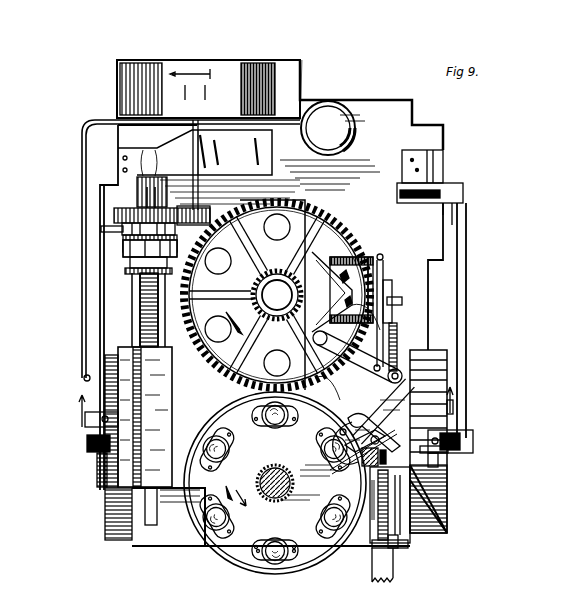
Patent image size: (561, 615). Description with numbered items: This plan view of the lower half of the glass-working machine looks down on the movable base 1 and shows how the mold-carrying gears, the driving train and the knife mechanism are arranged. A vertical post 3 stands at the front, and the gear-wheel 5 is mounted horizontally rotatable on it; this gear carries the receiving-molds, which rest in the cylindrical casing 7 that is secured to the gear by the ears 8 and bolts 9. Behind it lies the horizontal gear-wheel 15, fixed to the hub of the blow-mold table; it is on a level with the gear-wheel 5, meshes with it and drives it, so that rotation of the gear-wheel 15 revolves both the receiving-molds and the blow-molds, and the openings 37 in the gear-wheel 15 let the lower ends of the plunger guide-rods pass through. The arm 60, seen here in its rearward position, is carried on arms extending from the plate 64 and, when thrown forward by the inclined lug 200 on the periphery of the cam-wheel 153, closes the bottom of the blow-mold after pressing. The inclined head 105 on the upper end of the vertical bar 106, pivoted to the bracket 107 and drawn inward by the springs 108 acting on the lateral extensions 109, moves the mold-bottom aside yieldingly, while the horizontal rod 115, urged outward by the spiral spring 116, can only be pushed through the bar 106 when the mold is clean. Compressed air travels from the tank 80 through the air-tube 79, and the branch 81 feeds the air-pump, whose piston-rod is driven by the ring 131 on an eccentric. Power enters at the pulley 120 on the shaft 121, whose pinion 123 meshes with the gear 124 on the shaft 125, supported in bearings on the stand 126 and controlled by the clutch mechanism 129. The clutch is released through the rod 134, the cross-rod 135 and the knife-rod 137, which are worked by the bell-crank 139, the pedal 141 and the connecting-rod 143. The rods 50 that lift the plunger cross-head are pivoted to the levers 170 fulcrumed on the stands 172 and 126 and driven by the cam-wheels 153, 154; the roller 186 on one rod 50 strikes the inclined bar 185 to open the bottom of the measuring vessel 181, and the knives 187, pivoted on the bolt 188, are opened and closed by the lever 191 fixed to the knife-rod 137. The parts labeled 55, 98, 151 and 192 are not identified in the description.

The movable base 1 is at (283, 303).
The vertical post 3 is at (239, 487).
The gear-wheel 5 is at (275, 483).
The cylindrical casing 7 is at (270, 560).
The ears 8 is at (294, 551).
The bolts 9 is at (258, 551).
The gear-wheel 15 is at (277, 295).
The openings 37 is at (296, 364).
The rods 50 is at (92, 452).
The bracket 55 is at (406, 555).
The arm 60 is at (350, 354).
The plate 64 is at (379, 411).
The air-tube 79 is at (106, 120).
The compressed-air tank 80 is at (330, 145).
The branch 81 is at (100, 230).
The housing 98 is at (228, 152).
The inclined head 105 is at (392, 284).
The vertical bar 106 is at (400, 300).
The bracket 107 is at (368, 257).
The springs 108 is at (356, 257).
The lateral extensions 109 is at (383, 258).
The horizontal rod 115 is at (362, 386).
The spiral spring 116 is at (353, 552).
The pulley 120 is at (260, 60).
The shaft 121 is at (201, 60).
The pinion 123 is at (183, 208).
The gear 124 is at (120, 213).
The shaft 125 is at (140, 510).
The stand 126 is at (150, 178).
The clutch mechanism 129 is at (124, 250).
The ring 131 is at (125, 234).
The rod 134 is at (158, 413).
The cross-rod 135 is at (173, 500).
The knife-rod 137 is at (362, 463).
The bell-crank 139 is at (371, 542).
The pedal 141 is at (386, 584).
The connecting-rod 143 is at (402, 549).
The base 151 is at (177, 532).
The cam-wheel 153 is at (448, 461).
The cam-wheel 154 is at (100, 488).
The levers 170 is at (100, 302).
The stand 172 is at (445, 169).
The measuring vessel 181 is at (338, 440).
The inclined bar 185 is at (448, 452).
The roller 186 is at (460, 426).
The knives 187 is at (378, 432).
The bolt 188 is at (340, 452).
The lever 191 is at (352, 456).
The rack rod 192 is at (84, 378).
The lug 200 is at (448, 484).